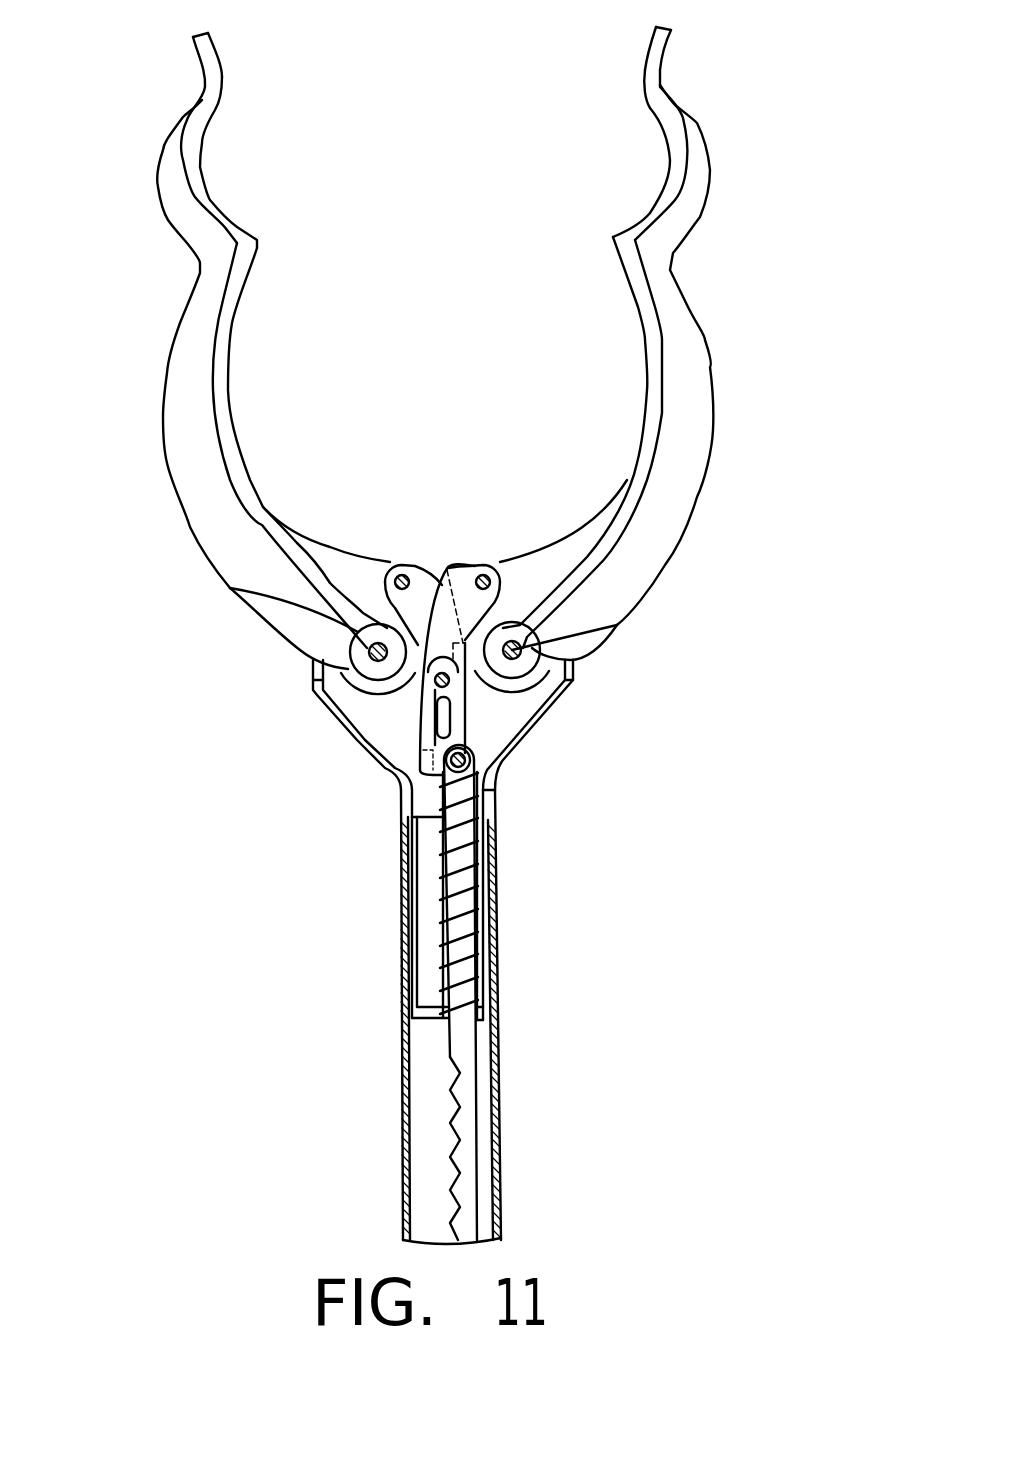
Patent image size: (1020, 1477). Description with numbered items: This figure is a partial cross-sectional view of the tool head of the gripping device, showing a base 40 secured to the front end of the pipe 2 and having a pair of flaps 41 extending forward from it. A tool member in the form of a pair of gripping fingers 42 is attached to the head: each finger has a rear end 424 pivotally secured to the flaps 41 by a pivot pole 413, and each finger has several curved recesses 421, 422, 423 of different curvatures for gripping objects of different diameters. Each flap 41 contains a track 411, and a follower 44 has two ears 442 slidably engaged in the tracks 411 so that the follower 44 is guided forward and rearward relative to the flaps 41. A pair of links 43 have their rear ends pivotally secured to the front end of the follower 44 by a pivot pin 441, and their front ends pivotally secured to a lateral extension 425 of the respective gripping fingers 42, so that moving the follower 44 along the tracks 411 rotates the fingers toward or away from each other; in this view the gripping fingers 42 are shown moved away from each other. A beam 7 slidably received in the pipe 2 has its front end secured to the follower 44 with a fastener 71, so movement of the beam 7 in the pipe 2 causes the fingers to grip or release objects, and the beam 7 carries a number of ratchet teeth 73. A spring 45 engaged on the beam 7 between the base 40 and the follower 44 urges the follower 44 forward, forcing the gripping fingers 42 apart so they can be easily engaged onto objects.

The pipe 2 is at (500, 1133).
The beam 7 is at (465, 1057).
The base 40 is at (497, 787).
The flaps 41 is at (570, 710).
The track 411 is at (455, 722).
The pivot poles 413 is at (230, 588).
The gripping fingers 42 is at (185, 380).
The curved recess 421 is at (230, 370).
The curved recess 422 is at (198, 183).
The curved recess 423 is at (217, 50).
The rear end 424 is at (577, 660).
The lateral extension 425 is at (513, 560).
The links 43 is at (400, 572).
The follower 44 is at (440, 780).
The pivot pin 441 is at (320, 686).
The ears 442 is at (440, 722).
The spring 45 is at (447, 873).
The fastener 71 is at (470, 770).
The teeth 73 is at (462, 1117).